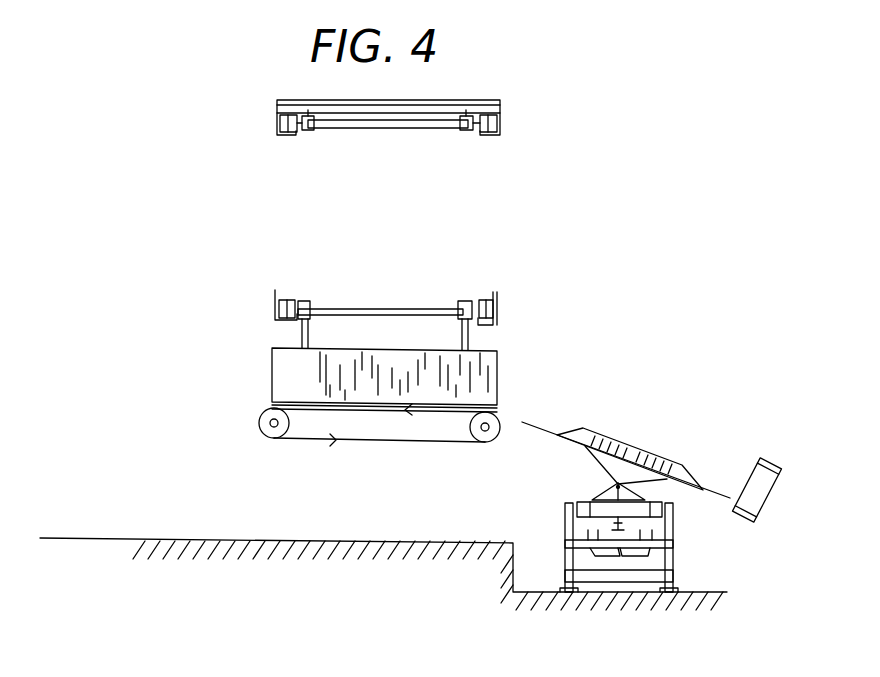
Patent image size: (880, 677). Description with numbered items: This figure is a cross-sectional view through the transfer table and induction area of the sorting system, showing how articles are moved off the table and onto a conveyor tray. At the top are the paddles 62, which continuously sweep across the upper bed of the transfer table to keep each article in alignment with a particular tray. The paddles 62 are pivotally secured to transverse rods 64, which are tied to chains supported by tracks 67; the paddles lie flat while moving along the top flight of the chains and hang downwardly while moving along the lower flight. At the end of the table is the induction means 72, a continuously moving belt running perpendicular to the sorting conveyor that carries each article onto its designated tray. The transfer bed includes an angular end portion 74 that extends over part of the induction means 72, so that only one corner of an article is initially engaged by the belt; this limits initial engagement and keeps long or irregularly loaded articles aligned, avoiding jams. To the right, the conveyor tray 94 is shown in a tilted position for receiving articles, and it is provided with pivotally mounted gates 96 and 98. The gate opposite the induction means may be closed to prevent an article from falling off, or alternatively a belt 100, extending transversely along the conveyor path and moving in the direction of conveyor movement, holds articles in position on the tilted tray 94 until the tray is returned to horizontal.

The paddles 62 is at (478, 100).
The transverse rods 64 is at (381, 130).
The tracks 67 is at (278, 120).
The induction means 72 is at (380, 440).
The angular end portion 74 is at (275, 405).
The conveyor trays 94 is at (632, 450).
The gate 96 is at (540, 430).
The gate 98 is at (707, 485).
The belt 100 is at (762, 520).